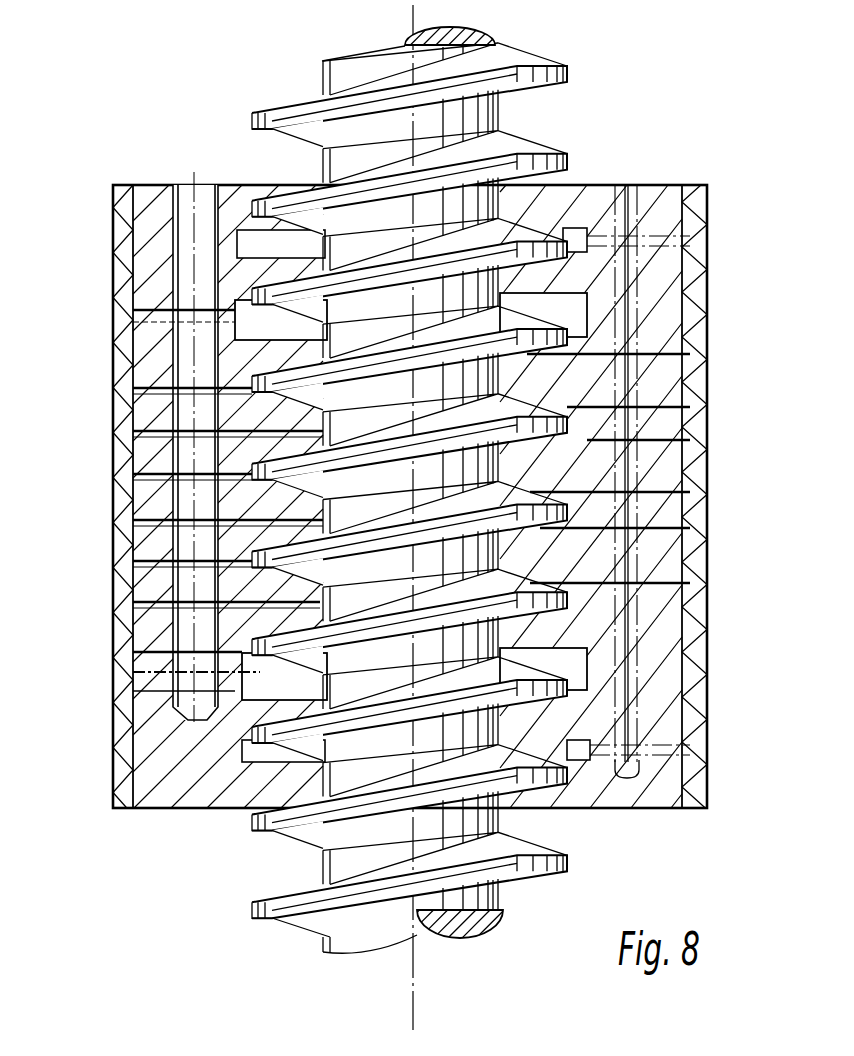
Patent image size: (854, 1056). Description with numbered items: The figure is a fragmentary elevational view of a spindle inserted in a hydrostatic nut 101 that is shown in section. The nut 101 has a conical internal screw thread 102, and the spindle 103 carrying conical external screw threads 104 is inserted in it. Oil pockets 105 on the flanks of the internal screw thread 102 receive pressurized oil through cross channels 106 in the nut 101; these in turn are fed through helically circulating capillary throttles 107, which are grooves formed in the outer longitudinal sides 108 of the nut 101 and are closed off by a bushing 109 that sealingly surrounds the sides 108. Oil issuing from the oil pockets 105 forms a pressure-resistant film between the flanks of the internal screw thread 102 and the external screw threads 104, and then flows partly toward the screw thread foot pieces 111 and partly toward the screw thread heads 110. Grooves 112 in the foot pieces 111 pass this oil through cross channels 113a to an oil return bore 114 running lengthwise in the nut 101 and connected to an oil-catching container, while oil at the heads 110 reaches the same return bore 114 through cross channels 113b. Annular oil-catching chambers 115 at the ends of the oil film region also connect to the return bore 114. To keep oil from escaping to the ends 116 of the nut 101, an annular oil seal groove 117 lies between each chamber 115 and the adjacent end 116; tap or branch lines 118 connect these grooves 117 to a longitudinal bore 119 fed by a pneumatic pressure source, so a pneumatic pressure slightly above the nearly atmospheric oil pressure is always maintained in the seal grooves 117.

The hydrostatic nut 101 is at (654, 184).
The conical internal screw thread 102 is at (560, 790).
The spindle 103 is at (330, 72).
The conical external screw threads 104 is at (528, 63).
The oil pockets 105 is at (540, 398).
The cross channels 106 is at (645, 344).
The capillary throttles 107 is at (690, 254).
The outer longitudinal sides 108 is at (134, 302).
The bushing 109 is at (697, 506).
The screw thread heads 110 is at (235, 460).
The screw thread foot pieces 111 is at (235, 500).
The grooves 112 is at (235, 558).
The cross channels 113a is at (235, 385).
The cross channels 113b is at (260, 432).
The oil return bore 114 is at (187, 200).
The annular oil-catching chambers 115 is at (575, 303).
The ends 116 is at (562, 232).
The annular oil seal groove 117 is at (585, 243).
The tap or branch lines 118 is at (615, 246).
The longitudinal bore 119 is at (236, 225).